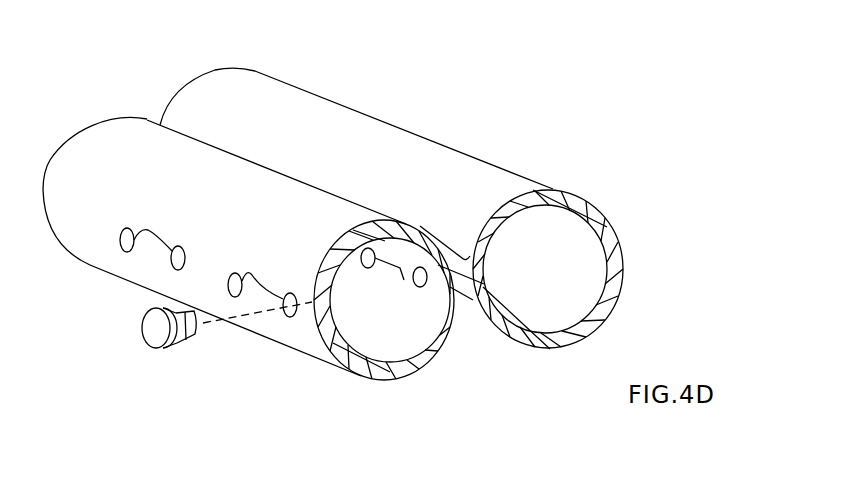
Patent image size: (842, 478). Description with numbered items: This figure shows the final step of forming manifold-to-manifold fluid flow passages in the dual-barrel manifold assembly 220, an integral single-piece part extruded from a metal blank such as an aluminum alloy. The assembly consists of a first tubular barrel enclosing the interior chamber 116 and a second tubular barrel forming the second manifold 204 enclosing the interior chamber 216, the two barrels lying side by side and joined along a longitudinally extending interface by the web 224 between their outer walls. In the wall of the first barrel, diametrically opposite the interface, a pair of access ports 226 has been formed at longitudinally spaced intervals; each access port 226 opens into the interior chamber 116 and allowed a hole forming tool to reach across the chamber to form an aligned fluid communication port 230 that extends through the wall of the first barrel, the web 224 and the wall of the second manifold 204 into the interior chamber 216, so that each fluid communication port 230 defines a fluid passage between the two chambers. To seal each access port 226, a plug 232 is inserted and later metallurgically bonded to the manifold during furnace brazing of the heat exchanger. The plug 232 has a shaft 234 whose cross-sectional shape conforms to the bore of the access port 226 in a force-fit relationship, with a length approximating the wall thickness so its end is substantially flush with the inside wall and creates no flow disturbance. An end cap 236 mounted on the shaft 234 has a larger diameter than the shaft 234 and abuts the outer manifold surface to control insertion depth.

The manifold assembly 220 is at (410, 103).
The second manifold 204 is at (505, 167).
The interior chamber of the first manifold 116 is at (410, 347).
The interior chamber of the second manifold 216 is at (590, 284).
The web 224 is at (475, 292).
The access port 226 is at (148, 231).
The fluid communication port 230 is at (413, 271).
The plug 232 is at (129, 323).
The shaft 234 is at (193, 333).
The end cap 236 is at (170, 348).